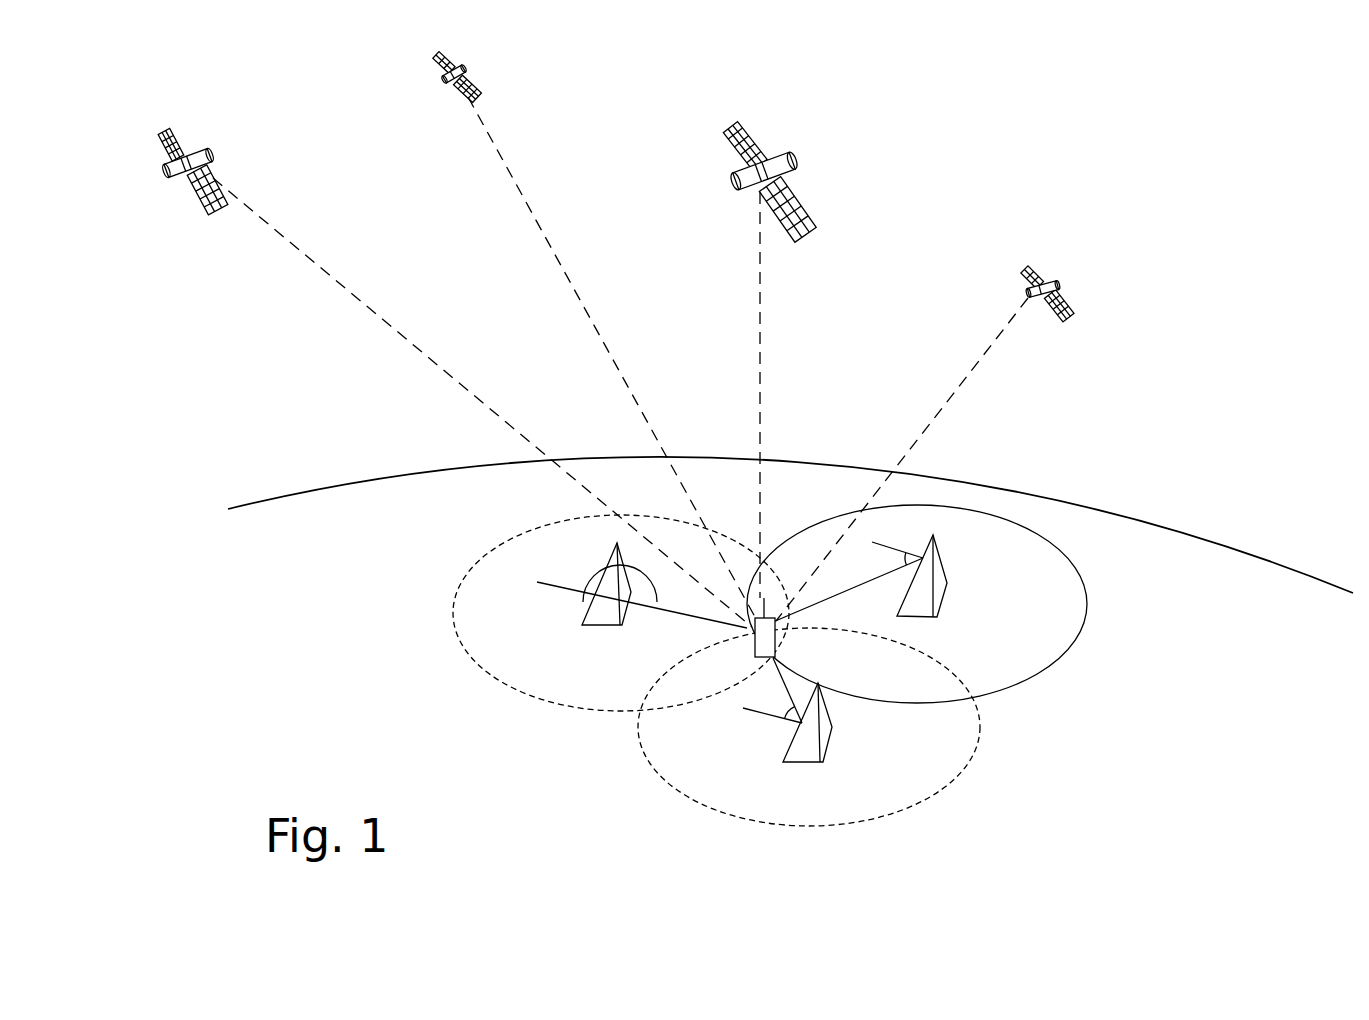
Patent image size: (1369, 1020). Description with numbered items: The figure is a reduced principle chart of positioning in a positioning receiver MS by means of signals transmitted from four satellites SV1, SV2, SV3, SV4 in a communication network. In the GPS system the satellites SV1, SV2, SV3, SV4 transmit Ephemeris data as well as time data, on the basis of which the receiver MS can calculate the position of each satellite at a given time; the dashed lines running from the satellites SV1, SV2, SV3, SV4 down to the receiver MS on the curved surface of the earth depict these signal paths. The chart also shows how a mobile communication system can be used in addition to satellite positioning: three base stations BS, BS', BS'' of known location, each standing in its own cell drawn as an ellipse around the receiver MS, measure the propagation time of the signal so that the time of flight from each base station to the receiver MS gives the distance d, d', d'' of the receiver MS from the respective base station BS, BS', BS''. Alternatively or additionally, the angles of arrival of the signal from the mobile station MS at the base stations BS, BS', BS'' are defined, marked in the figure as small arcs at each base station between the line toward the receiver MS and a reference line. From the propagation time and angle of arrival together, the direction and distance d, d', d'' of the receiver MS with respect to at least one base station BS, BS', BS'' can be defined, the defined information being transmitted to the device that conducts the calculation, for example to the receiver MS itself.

The satellite SV1 is at (430, 360).
The satellite SV2 is at (585, 314).
The satellite SV3 is at (769, 340).
The satellite SV4 is at (934, 420).
The base station BS is at (917, 604).
The base station BS' is at (621, 613).
The base station BS'' is at (809, 752).
The positioning receiver MS is at (777, 643).
The distance d is at (848, 589).
The distance d' is at (642, 624).
The distance d'' is at (752, 715).